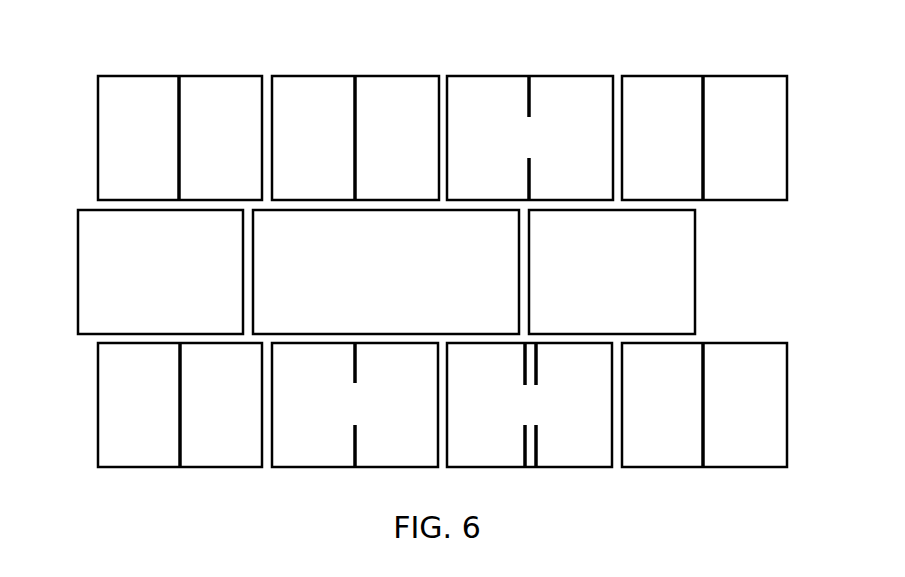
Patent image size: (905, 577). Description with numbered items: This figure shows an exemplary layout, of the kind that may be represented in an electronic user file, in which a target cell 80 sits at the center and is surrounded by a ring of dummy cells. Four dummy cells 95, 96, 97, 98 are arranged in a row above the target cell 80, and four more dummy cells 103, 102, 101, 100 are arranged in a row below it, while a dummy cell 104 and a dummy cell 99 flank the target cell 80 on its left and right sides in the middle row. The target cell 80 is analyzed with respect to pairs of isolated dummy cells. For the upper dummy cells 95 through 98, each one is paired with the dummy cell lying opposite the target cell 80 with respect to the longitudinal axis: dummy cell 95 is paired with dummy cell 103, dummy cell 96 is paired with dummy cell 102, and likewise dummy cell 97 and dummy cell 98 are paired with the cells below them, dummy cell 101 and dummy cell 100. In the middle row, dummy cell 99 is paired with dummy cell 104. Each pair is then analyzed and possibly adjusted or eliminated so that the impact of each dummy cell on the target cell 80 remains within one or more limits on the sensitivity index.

The dummy cell 95 is at (97, 138).
The dummy cell 96 is at (335, 76).
The dummy cell 97 is at (550, 76).
The dummy cell 98 is at (789, 139).
The dummy cell 99 is at (598, 287).
The target cell 80 is at (399, 287).
The dummy cell 104 is at (179, 287).
The dummy cell 103 is at (97, 406).
The dummy cell 102 is at (323, 468).
The dummy cell 101 is at (548, 468).
The dummy cell 100 is at (788, 404).